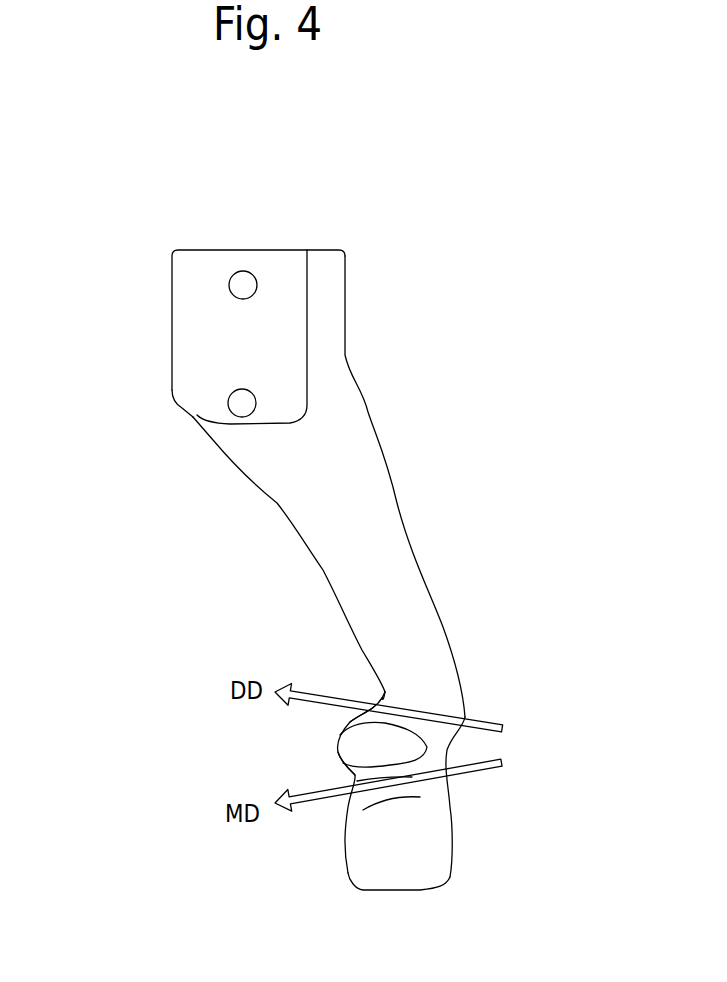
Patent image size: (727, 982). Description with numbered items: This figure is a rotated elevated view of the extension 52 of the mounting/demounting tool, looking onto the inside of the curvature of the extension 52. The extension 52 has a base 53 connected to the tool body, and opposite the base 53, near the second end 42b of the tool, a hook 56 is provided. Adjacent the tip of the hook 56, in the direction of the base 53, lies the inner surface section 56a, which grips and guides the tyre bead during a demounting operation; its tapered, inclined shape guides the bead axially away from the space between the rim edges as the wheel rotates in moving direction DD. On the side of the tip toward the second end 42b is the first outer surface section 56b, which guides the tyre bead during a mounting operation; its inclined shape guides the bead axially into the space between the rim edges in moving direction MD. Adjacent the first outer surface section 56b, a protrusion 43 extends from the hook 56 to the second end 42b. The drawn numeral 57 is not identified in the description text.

The base 53 is at (218, 337).
The extension 52 is at (383, 531).
The junction region 57 is at (387, 692).
The protrusion 43 is at (438, 842).
The second end 42b is at (412, 890).
The hook 56 is at (355, 745).
The inner surface section 56a is at (335, 676).
The first outer surface section 56b is at (328, 833).